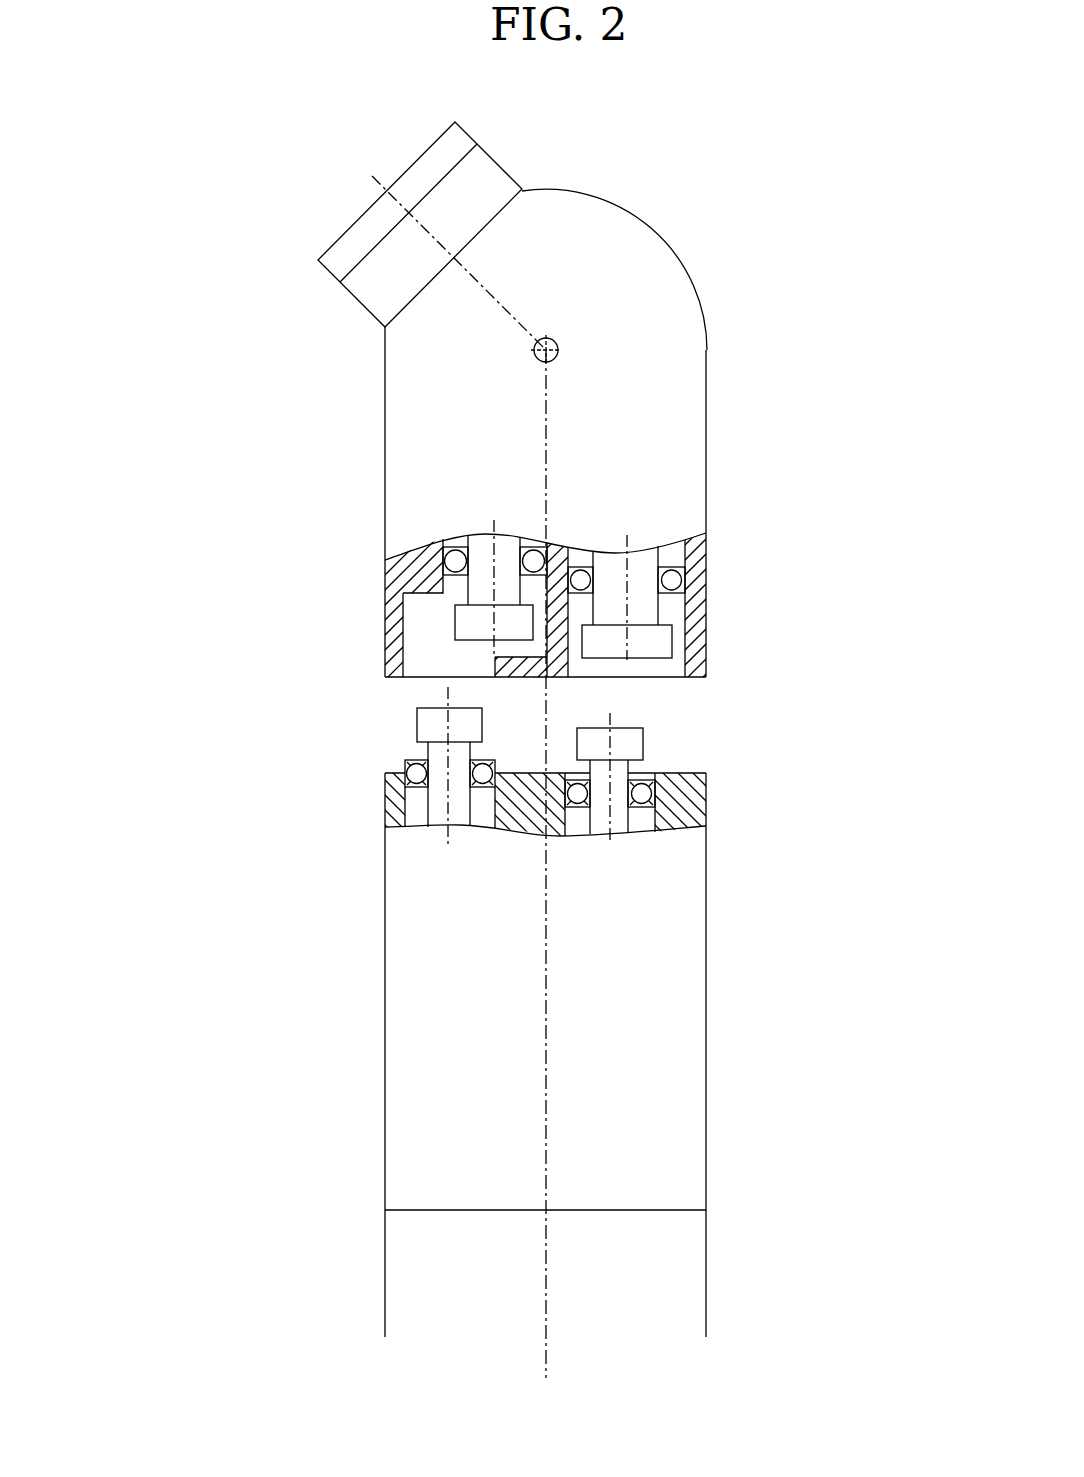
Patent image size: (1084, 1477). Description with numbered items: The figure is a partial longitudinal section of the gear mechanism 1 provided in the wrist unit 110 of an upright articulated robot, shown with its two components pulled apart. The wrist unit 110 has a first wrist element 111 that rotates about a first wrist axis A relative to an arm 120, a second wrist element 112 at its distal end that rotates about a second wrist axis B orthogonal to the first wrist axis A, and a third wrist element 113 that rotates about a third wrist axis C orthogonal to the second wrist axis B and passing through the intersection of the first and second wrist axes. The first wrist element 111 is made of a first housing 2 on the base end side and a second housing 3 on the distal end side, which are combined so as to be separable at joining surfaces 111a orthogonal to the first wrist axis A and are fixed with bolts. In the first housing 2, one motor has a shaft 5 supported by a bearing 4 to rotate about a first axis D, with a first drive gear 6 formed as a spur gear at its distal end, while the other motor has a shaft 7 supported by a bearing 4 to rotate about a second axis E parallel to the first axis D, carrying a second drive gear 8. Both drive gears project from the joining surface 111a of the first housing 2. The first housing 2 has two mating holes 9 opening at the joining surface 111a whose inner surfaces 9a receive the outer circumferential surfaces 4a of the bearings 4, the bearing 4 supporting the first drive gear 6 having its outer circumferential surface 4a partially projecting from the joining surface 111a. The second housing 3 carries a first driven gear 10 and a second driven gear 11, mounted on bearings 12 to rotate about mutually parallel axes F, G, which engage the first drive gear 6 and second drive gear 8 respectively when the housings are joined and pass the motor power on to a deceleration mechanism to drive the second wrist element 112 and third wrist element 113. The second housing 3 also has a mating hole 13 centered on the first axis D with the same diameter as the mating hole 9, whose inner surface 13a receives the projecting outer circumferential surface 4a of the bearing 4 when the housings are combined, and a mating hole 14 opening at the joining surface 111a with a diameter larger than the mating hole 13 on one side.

The gear mechanism 1 is at (287, 682).
The first housing 2 is at (385, 958).
The second housing 3 is at (385, 440).
The bearing 4 is at (405, 765).
The outer circumferential surface 4a is at (405, 780).
The shaft 5 is at (430, 802).
The first drive gear 6 is at (417, 718).
The shaft 7 is at (588, 820).
The second drive gear 8 is at (643, 742).
The mating hole 9 is at (483, 823).
The inner surface 9a is at (415, 823).
The first driven gear 10 is at (455, 622).
The second driven gear 11 is at (673, 640).
The bearing 12 is at (443, 557).
The mating hole 13 is at (407, 588).
The inner surface 13a is at (407, 655).
The mating hole 14 is at (668, 612).
The wrist unit 110 is at (677, 150).
The first wrist element 111 is at (706, 520).
The joining surface 111a is at (700, 678).
The second wrist element 112 is at (495, 160).
The third wrist element 113 is at (432, 145).
The arm 120 is at (385, 1265).
The first wrist axis A is at (547, 1072).
The second wrist axis B is at (557, 351).
The third wrist axis C is at (382, 185).
The first axis D is at (448, 847).
The second axis E is at (610, 843).
The axis F is at (494, 520).
The axis G is at (627, 535).